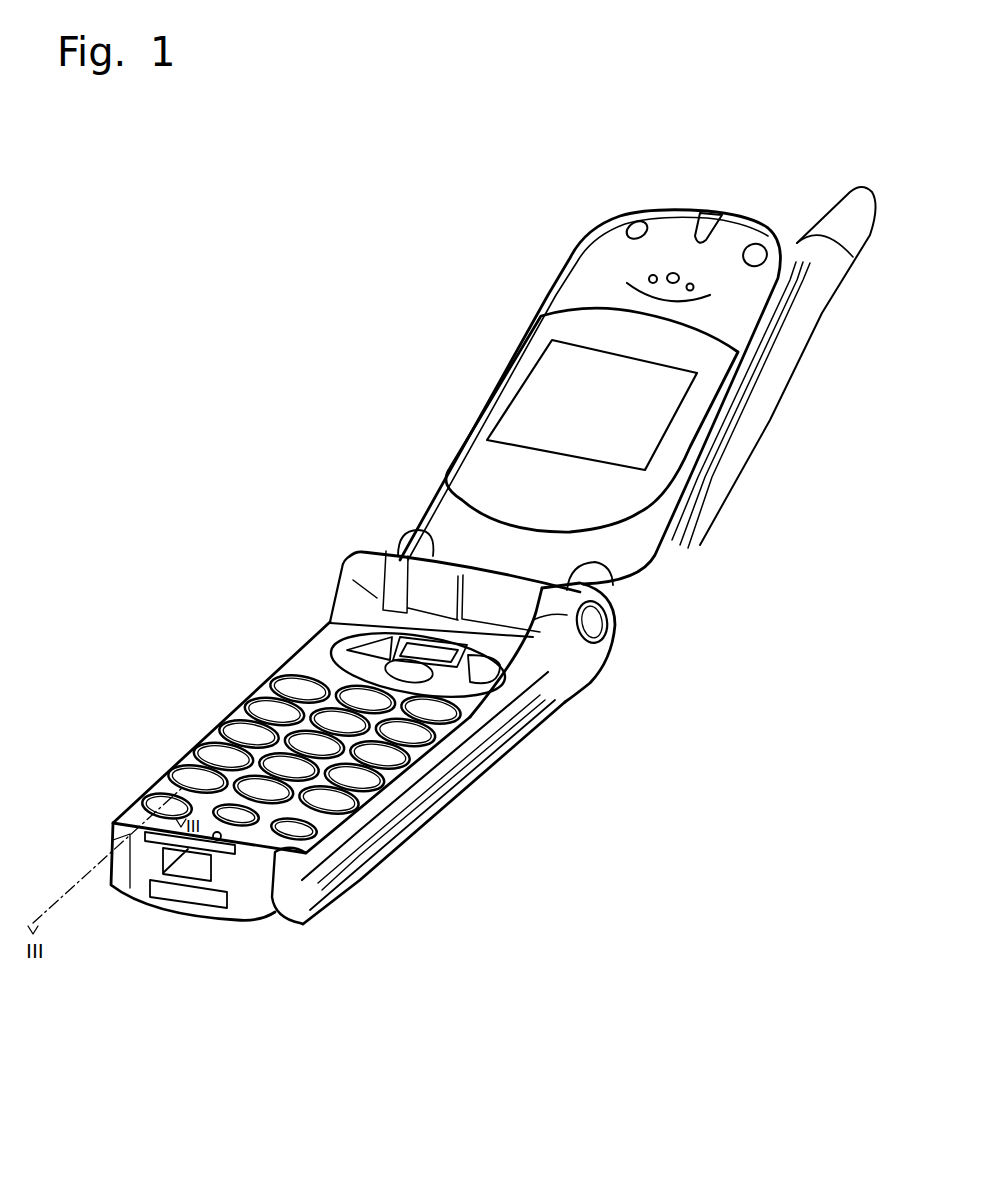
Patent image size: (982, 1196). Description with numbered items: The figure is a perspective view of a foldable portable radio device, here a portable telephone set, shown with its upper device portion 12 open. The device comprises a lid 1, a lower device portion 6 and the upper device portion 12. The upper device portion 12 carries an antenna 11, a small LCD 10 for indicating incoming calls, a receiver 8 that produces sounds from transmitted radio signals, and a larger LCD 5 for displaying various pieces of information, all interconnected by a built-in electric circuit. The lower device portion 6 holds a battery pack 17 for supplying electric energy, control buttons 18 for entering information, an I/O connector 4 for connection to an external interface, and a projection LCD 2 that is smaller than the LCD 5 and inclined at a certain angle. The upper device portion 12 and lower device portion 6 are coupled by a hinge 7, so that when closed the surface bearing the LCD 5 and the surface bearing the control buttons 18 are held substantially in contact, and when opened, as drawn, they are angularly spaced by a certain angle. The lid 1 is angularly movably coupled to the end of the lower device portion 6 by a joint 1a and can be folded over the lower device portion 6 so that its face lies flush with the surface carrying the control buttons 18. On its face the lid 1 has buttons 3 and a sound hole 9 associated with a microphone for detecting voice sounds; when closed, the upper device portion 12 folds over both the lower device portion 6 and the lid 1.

The lid 1 is at (433, 762).
The joint 1a is at (284, 899).
The projection LCD 2 is at (183, 867).
The buttons 3 is at (215, 749).
The I/O connector 4 is at (195, 905).
The LCD 5 is at (595, 367).
The lower device portion 6 is at (583, 684).
The hinge 7 is at (603, 630).
The receiver 8 is at (651, 277).
The sound hole 9 is at (220, 838).
The LCD 10 is at (714, 212).
The antenna 11 is at (855, 190).
The upper device portion 12 is at (685, 534).
The battery pack 17 is at (527, 728).
The control buttons 18 is at (348, 652).